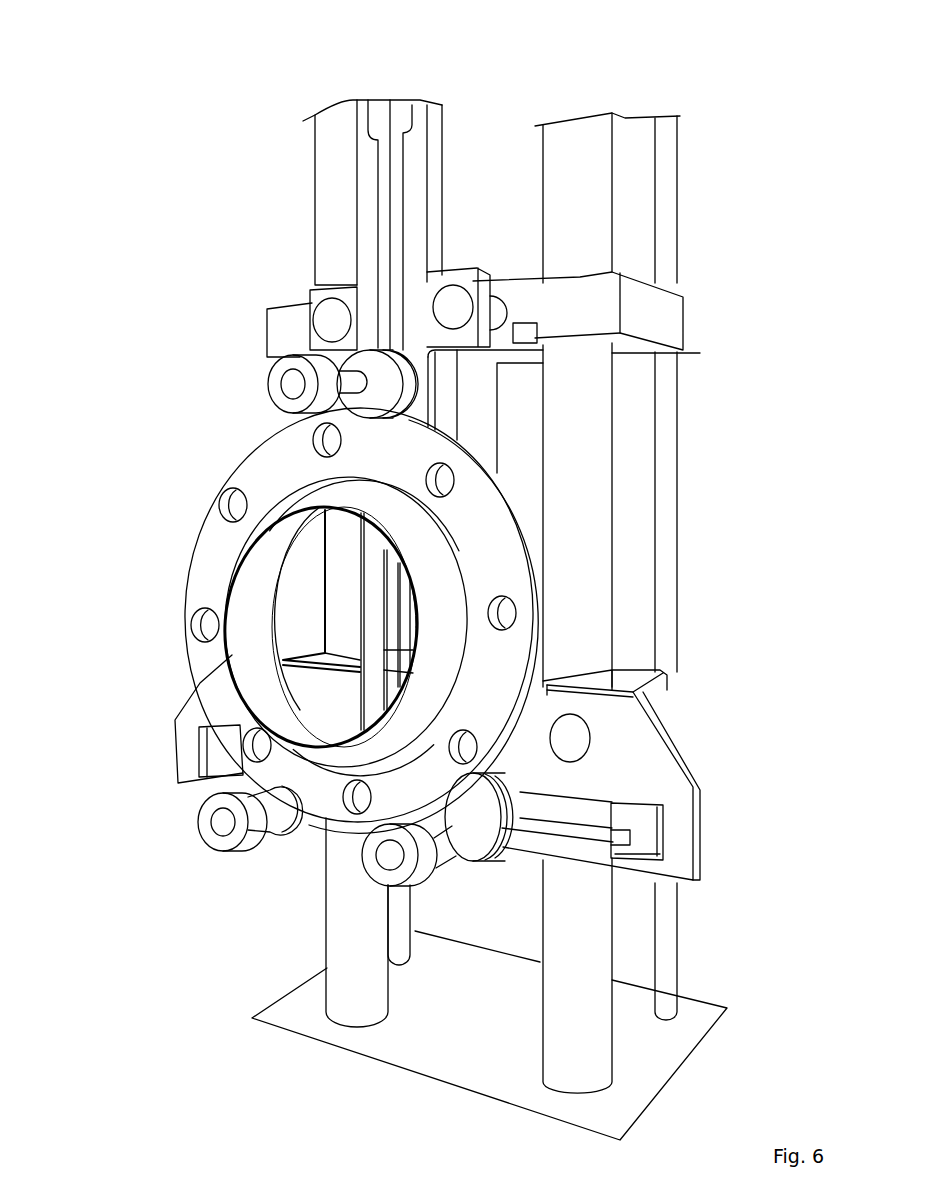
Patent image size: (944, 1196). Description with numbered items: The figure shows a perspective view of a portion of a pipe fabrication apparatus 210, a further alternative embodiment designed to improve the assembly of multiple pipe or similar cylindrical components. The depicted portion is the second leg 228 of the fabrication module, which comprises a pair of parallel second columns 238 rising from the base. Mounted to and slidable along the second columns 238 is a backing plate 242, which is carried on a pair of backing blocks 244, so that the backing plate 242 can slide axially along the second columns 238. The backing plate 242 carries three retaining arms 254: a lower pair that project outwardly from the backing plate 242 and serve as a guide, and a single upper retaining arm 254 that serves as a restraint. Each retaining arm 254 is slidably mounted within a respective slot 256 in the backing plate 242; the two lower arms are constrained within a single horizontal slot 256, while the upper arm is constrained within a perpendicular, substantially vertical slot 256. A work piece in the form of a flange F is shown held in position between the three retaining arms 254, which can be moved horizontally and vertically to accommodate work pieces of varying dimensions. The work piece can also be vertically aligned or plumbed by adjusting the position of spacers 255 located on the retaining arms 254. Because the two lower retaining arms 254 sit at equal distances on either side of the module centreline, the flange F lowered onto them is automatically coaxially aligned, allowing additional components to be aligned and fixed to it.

The pipe fabrication apparatus 210 is at (125, 112).
The slot 256 is at (383, 201).
The backing block 244 is at (650, 310).
The second leg 228 is at (686, 348).
The retaining arm 254 is at (277, 383).
The flange F is at (207, 542).
The backing plate 242 is at (655, 777).
The spacer 255 is at (488, 813).
The second column 238 is at (335, 970).